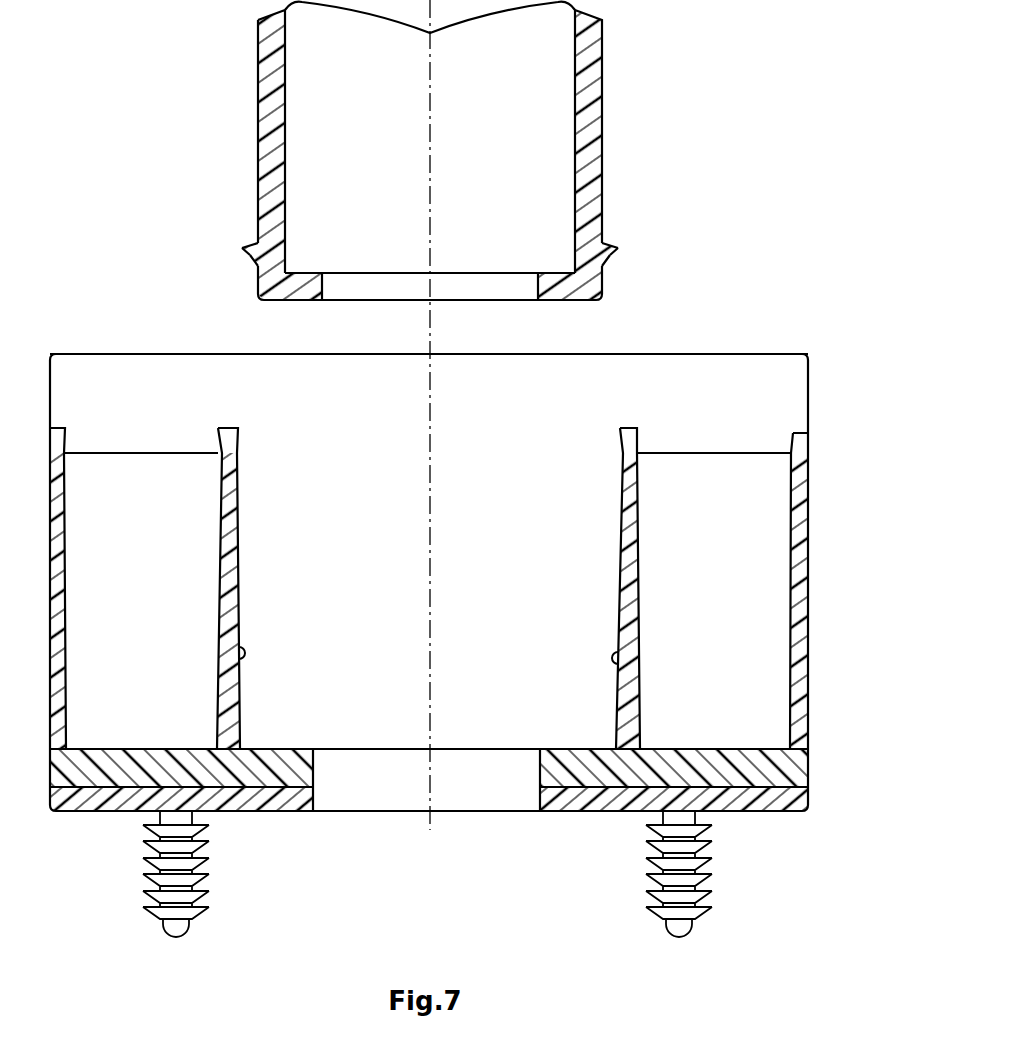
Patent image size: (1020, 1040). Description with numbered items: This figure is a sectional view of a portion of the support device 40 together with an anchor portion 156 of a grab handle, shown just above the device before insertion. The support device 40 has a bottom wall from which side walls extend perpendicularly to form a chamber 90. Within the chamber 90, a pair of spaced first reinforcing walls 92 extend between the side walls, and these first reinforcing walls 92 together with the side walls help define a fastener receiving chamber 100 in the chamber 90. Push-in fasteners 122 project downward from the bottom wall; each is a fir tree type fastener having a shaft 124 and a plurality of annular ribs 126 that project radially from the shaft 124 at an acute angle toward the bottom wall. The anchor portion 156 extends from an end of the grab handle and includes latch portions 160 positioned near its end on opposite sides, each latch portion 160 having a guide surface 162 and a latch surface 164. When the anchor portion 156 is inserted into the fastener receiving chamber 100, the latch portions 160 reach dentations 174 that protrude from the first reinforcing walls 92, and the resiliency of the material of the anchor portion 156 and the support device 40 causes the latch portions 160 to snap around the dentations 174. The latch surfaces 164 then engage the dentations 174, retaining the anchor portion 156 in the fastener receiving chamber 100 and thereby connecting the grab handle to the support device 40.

The support device 40 is at (755, 402).
The chamber 90 is at (140, 368).
The first reinforcing walls 92 is at (236, 572).
The fastener receiving chamber 100 is at (273, 428).
The push-in fasteners 122 is at (174, 918).
The shaft 124 is at (172, 923).
The annular ribs 126 is at (152, 898).
The anchor portion 156 is at (268, 96).
The latch portions 160 is at (247, 252).
The guide surface 162 is at (247, 262).
The latch surface 164 is at (250, 246).
The dentations 174 is at (250, 653).